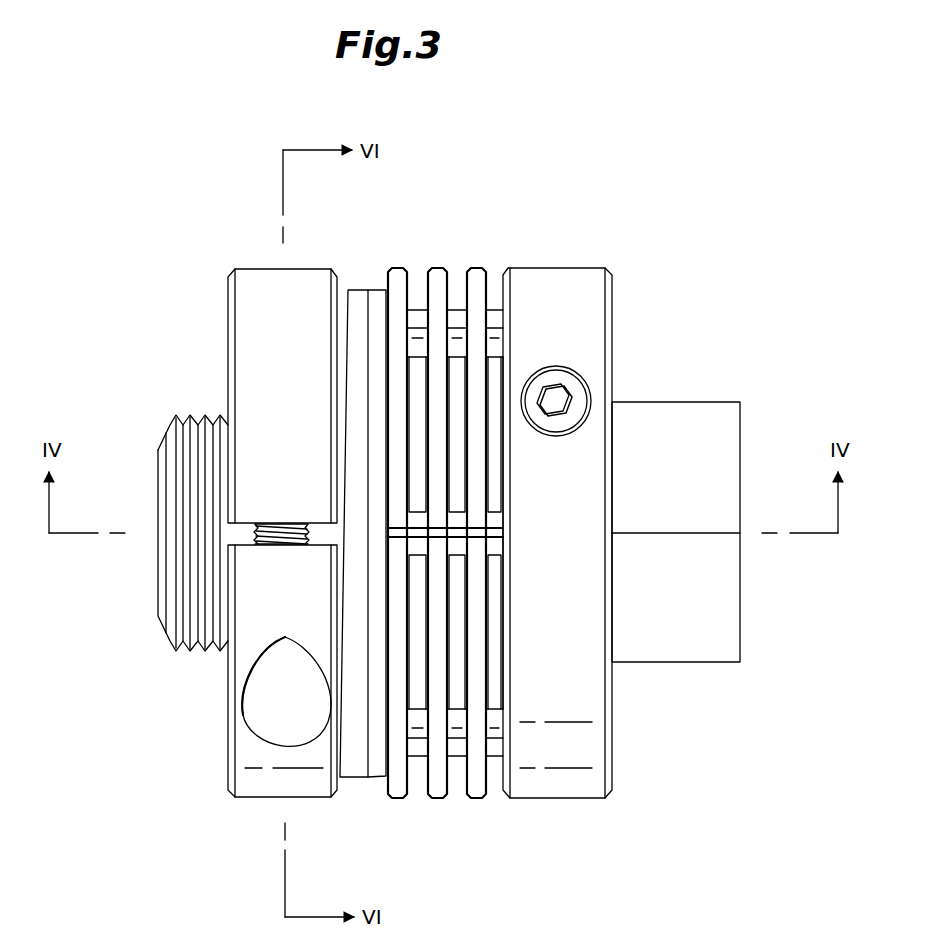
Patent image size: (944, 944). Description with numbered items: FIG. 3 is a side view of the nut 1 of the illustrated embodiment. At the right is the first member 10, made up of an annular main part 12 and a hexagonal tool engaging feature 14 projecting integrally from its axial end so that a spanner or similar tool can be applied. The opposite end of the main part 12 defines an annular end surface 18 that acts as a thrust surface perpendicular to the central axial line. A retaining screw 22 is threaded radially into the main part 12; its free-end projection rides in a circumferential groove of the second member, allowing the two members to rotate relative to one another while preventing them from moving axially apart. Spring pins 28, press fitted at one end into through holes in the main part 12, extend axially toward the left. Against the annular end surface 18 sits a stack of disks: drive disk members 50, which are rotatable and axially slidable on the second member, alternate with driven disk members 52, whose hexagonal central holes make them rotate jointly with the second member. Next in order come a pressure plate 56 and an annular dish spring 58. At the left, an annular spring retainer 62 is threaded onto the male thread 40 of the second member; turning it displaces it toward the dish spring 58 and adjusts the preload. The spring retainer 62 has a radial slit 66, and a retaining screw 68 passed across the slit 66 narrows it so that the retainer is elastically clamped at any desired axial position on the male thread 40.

The nut 1 is at (513, 214).
The first member 10 is at (624, 331).
The annular main part 12 is at (571, 283).
The tool engaging feature 14 is at (693, 413).
The annular end surface 18 is at (497, 672).
The retaining screw 22 is at (582, 398).
The spring pin 28 is at (453, 318).
The male thread 40 is at (198, 630).
The drive disk member 50 is at (475, 455).
The driven disk member 52 is at (457, 503).
The pressure plate 56 is at (375, 290).
The annular dish spring 58 is at (360, 290).
The spring retainer 62 is at (262, 283).
The slit 66 is at (244, 530).
The retaining screw 68 is at (288, 545).